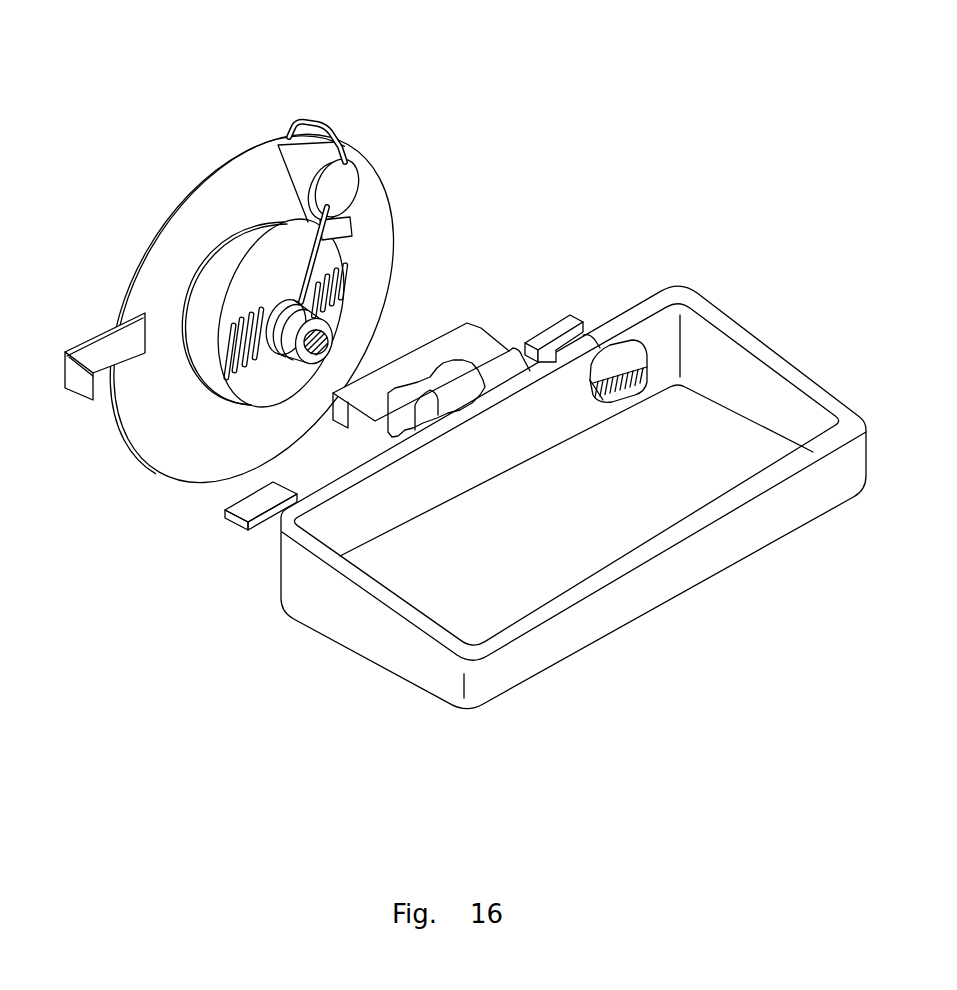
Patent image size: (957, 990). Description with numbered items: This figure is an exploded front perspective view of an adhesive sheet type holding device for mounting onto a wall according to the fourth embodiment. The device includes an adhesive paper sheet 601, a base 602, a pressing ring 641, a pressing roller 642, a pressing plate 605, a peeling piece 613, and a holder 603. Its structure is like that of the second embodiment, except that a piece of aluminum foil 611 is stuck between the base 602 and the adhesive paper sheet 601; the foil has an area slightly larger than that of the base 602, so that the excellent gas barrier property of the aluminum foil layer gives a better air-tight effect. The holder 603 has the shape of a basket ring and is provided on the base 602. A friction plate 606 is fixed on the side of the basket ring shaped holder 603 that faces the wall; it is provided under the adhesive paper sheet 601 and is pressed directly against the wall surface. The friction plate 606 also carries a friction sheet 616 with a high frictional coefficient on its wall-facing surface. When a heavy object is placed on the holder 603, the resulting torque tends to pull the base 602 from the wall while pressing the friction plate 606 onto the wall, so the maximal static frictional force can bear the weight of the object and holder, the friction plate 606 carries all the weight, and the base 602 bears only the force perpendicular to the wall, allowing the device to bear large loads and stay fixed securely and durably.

The adhesive paper sheet 601 is at (370, 200).
The base 602 is at (330, 331).
The holder 603 is at (705, 365).
The pressing plate 605 is at (342, 254).
The friction plate 606 is at (585, 330).
The aluminum foil 611 is at (225, 243).
The peeling piece 613 is at (97, 343).
The friction sheet 616 is at (543, 330).
The pressing ring 641 is at (243, 228).
The pressing roller 642 is at (296, 136).